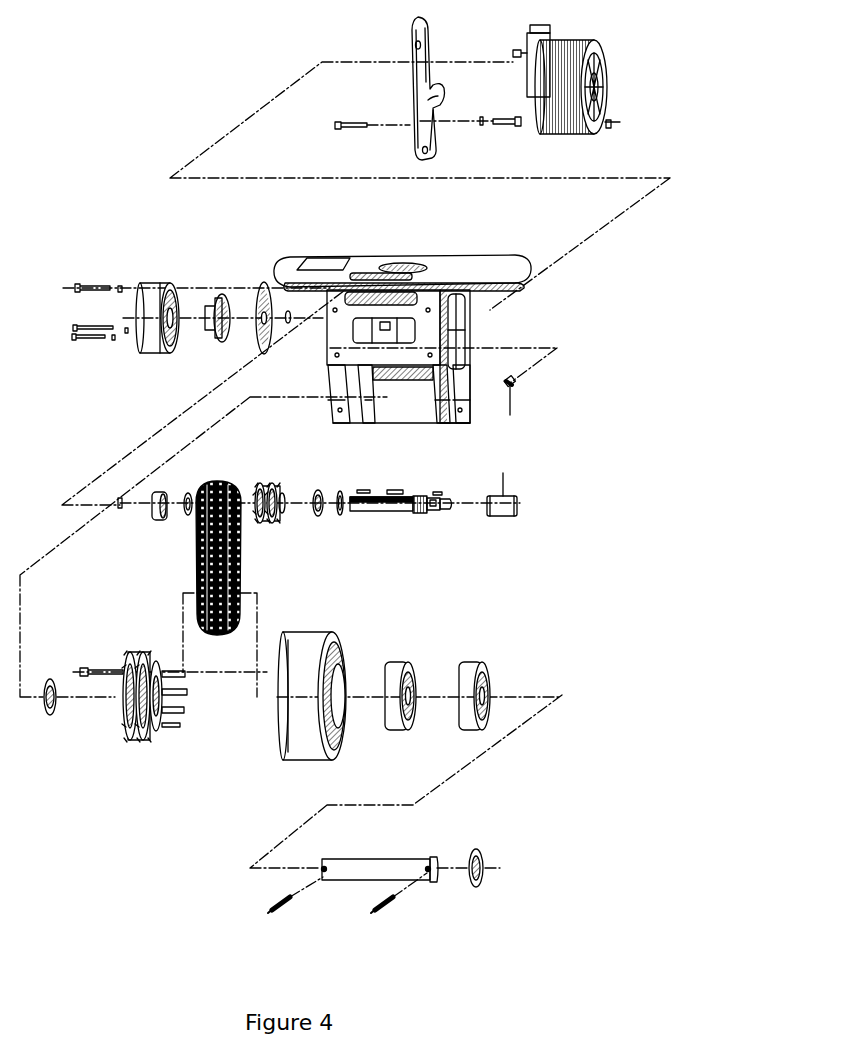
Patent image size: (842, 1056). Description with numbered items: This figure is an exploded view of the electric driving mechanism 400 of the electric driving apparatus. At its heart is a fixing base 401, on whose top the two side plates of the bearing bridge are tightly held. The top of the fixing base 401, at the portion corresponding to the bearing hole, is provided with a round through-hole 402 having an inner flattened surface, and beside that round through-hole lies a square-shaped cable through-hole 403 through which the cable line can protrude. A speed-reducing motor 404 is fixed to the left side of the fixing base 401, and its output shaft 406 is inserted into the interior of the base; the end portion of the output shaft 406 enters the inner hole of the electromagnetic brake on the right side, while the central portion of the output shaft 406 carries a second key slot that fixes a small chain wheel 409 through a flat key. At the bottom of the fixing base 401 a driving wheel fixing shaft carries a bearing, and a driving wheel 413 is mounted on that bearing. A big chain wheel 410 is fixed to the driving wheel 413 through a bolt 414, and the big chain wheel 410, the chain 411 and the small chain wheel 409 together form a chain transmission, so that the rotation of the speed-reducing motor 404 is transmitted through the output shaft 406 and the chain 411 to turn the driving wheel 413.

The electric driving mechanism 400 is at (560, 418).
The fixing base 401 is at (463, 265).
The round through-hole 402 is at (403, 260).
The square-shaped cable through-hole 403 is at (373, 272).
The speed-reducing motor 404 is at (625, 92).
The output shaft 406 is at (383, 518).
The small chain wheel 409 is at (270, 483).
The big chain wheel 410 is at (147, 645).
The chain 411 is at (240, 566).
The driving wheel 413 is at (317, 622).
The bolt 414 is at (110, 677).